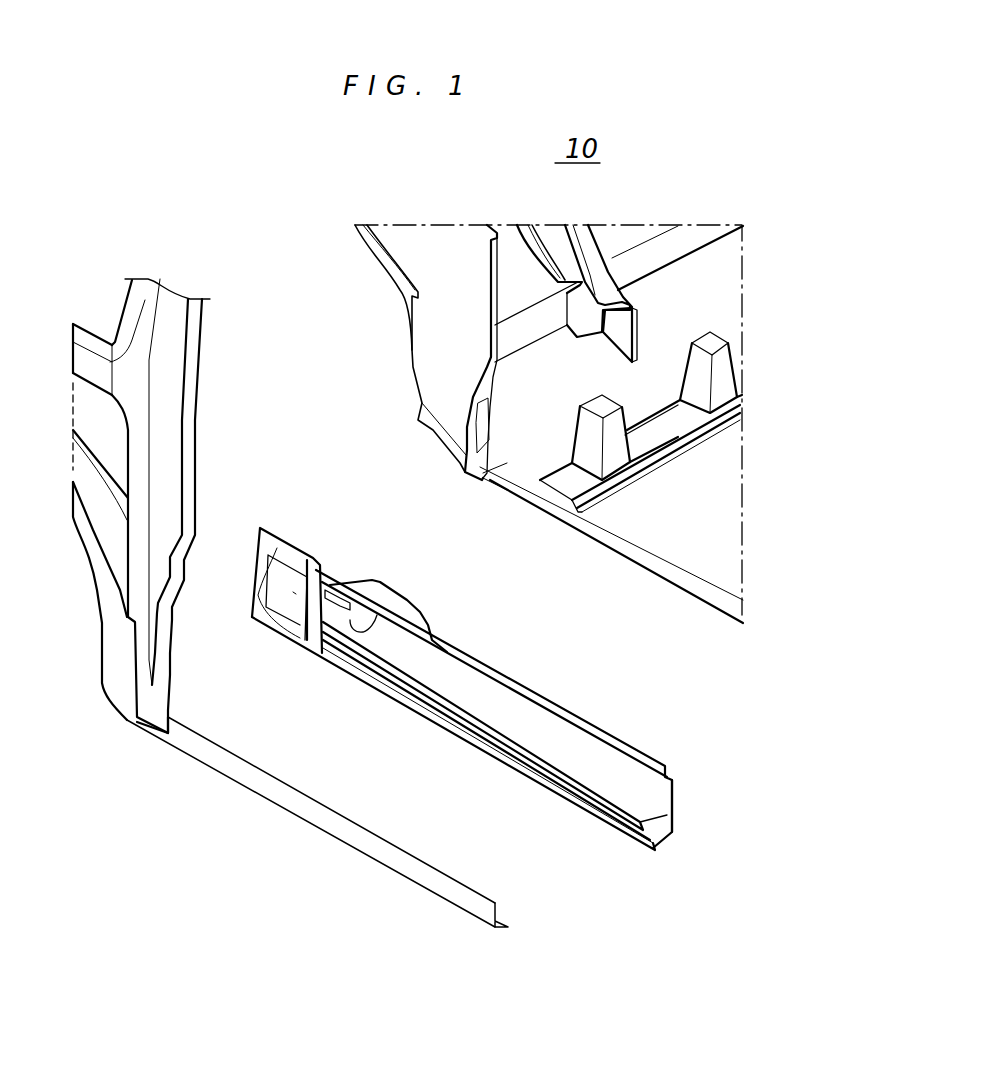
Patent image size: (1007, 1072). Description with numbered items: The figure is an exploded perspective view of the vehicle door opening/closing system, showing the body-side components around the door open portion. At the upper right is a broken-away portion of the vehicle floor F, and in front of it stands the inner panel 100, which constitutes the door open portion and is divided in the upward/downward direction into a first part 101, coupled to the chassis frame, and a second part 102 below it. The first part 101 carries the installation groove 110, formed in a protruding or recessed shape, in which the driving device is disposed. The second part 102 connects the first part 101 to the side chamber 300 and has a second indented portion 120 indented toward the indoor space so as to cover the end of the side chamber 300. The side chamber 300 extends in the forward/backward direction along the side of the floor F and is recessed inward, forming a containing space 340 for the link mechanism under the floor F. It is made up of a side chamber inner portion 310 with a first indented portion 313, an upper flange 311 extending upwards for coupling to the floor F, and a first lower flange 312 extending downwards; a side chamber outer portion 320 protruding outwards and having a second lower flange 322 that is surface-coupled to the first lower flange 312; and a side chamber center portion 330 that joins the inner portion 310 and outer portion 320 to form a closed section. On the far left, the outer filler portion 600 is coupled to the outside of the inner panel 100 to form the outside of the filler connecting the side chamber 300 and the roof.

The inner panel 100 is at (290, 292).
The first part 101 is at (437, 273).
The second part 102 is at (274, 552).
The installation groove 110 is at (502, 435).
The second indented portion 120 is at (293, 592).
The side chamber 300 is at (458, 765).
The side chamber inner portion 310 is at (545, 692).
The upper flange 311 is at (473, 663).
The first lower flange 312 is at (626, 829).
The first indented portion 313 is at (672, 815).
The side chamber outer portion 320 is at (343, 830).
The second lower flange 322 is at (508, 927).
The side chamber center portion 330 is at (555, 764).
The containing space 340 is at (393, 594).
The outer filler portion 600 is at (172, 315).
The floor F is at (717, 510).